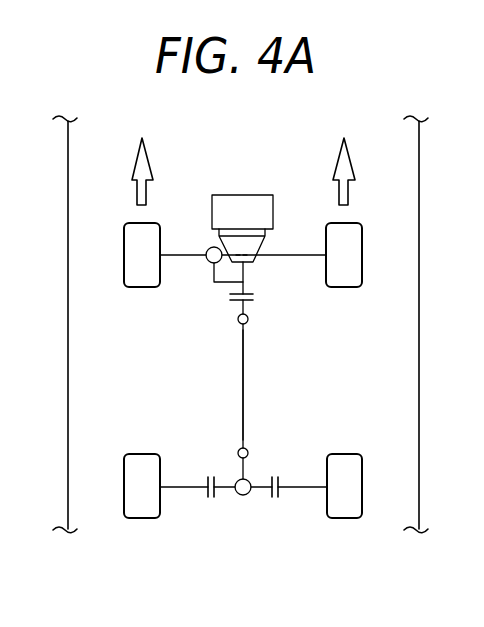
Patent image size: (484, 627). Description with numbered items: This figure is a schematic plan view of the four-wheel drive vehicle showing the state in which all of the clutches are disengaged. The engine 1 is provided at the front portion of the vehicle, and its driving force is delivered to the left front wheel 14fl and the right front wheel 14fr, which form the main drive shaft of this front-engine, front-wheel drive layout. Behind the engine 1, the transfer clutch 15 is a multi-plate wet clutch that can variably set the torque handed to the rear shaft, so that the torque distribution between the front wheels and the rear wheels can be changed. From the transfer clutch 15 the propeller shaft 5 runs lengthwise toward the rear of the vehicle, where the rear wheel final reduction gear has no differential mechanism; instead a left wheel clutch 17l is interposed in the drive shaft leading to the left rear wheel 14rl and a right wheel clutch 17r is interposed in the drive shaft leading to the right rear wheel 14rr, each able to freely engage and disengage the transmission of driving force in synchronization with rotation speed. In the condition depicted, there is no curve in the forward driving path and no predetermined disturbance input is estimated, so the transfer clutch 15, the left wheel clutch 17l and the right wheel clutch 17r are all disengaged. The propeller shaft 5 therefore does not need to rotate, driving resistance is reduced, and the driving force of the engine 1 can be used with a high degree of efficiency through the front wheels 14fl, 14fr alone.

The engine 1 is at (243, 194).
The propeller shaft 5 is at (243, 402).
The transfer clutch 15 is at (257, 297).
The left front wheel 14fl is at (142, 287).
The right front wheel 14fr is at (345, 287).
The left rear wheel 14rl is at (142, 518).
The right rear wheel 14rr is at (345, 518).
The left wheel clutch 17l is at (211, 497).
The right wheel clutch 17r is at (275, 497).